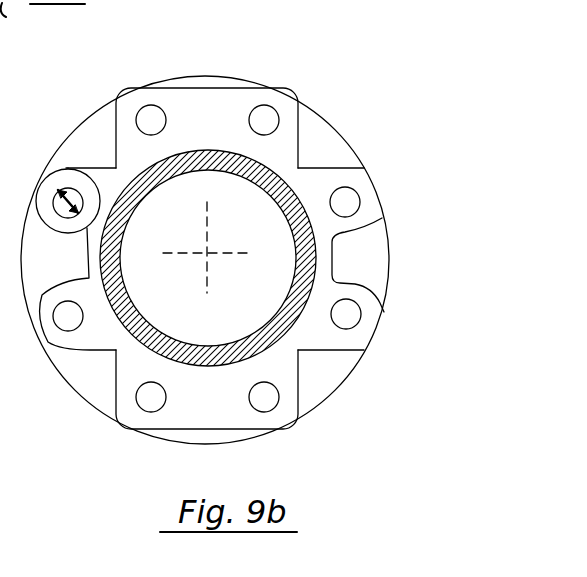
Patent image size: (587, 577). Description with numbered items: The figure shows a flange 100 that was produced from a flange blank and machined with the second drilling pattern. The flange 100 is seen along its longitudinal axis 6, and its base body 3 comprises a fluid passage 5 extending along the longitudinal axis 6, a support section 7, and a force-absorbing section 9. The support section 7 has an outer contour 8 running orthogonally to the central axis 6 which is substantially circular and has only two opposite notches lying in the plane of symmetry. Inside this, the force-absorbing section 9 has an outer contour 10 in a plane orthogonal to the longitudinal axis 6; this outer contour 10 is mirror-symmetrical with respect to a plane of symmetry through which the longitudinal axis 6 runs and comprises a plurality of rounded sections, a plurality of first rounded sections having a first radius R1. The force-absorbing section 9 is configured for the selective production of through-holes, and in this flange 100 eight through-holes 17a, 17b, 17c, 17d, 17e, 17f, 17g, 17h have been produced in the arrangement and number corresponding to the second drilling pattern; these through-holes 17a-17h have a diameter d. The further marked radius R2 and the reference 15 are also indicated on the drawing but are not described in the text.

The flange 100 is at (330, 79).
The outer contour of the support section 8 is at (240, 76).
The force-absorbing section 9 is at (204, 100).
The through-hole 17a is at (134, 118).
The through-hole 17b is at (75, 226).
The through-hole 17c is at (63, 329).
The through-hole 17d is at (145, 412).
The through-hole 17e is at (264, 412).
The through-hole 17f is at (357, 323).
The through-hole 17g is at (360, 203).
The through-hole 17h is at (280, 122).
The first radius R1 is at (137, 87).
The ring outer radius R2 is at (125, 172).
The diameter d is at (54, 253).
The base body 3 is at (347, 390).
The outer contour of the force-absorbing section 10 is at (300, 380).
The support section 7 is at (370, 264).
The rim edge 15 is at (47, 381).
The fluid passage 5 is at (243, 206).
The longitudinal axis 6 is at (201, 261).